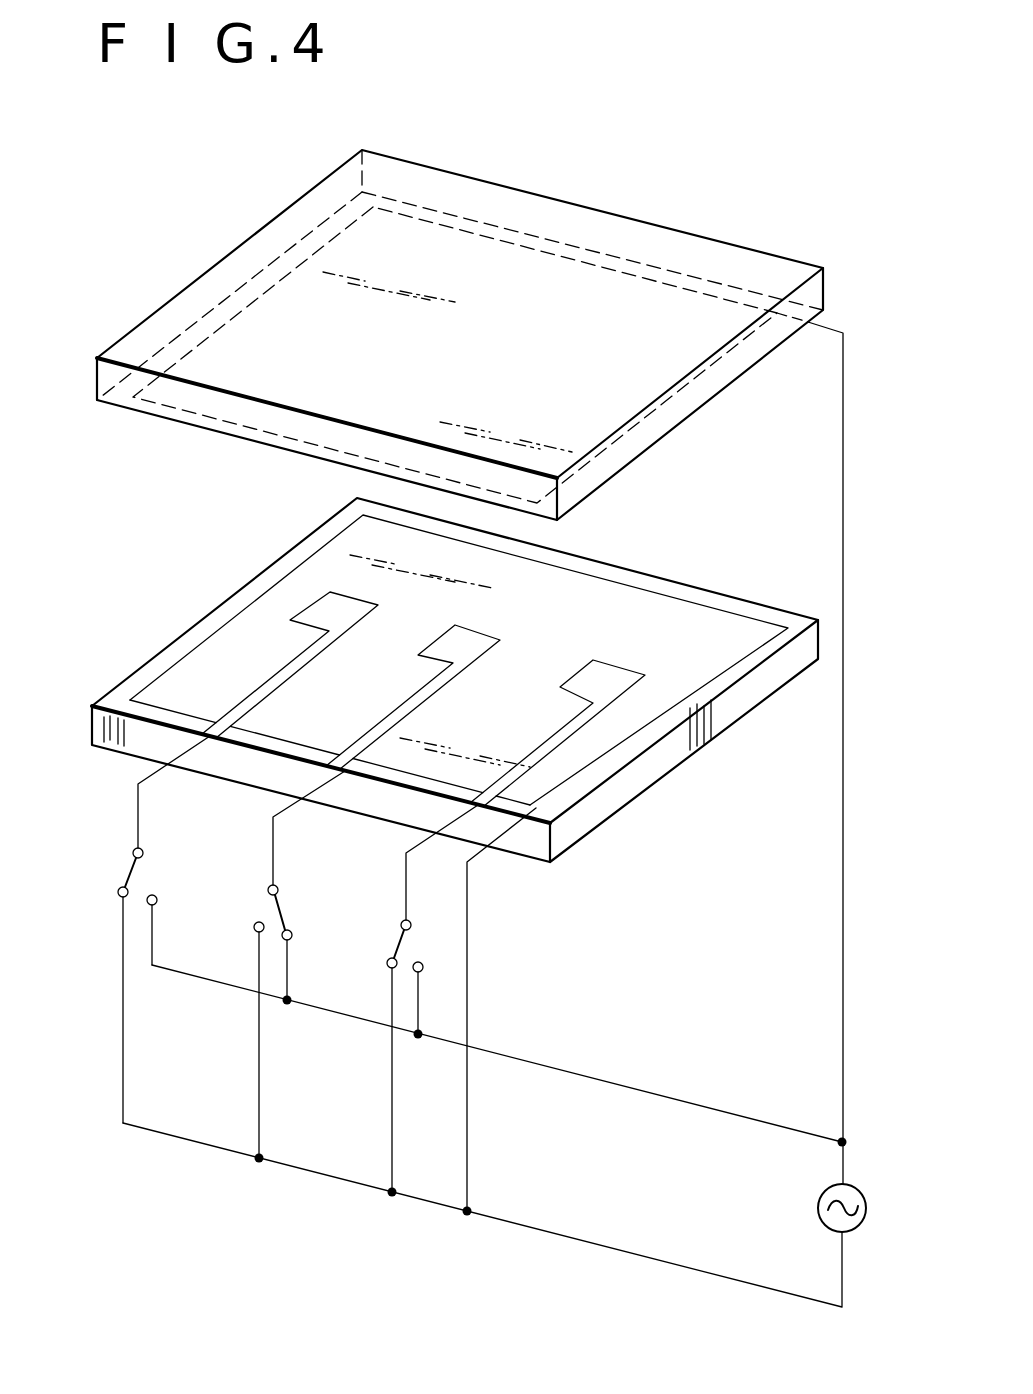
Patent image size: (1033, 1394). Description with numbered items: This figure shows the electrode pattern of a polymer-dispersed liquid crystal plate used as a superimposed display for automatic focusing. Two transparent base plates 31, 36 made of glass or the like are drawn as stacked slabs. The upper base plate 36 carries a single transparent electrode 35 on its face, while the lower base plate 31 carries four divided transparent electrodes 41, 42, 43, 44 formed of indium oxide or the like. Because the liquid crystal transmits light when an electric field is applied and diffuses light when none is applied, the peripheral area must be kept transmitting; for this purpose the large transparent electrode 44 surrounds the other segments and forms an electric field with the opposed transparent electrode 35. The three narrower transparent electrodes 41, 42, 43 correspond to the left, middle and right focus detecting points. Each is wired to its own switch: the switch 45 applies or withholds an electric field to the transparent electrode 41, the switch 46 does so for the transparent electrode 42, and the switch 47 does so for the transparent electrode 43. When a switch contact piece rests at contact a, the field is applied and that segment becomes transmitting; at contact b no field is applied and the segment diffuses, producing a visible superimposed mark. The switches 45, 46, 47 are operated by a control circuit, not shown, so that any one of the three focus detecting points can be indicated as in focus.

The transparent base plate 31 is at (90, 717).
The transparent electrode 35 is at (180, 413).
The transparent base plate 36 is at (121, 338).
The transparent electrode 41 is at (212, 738).
The transparent electrode 42 is at (348, 773).
The transparent electrode 43 is at (493, 803).
The transparent electrode 44 is at (538, 808).
The switch 45 is at (133, 852).
The switch 46 is at (268, 889).
The switch 47 is at (401, 923).